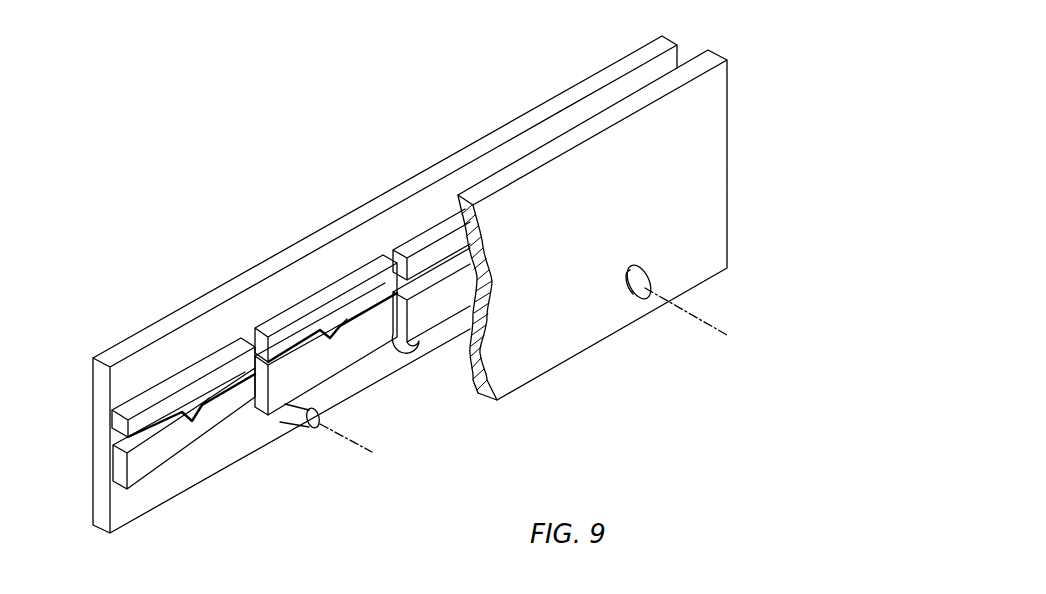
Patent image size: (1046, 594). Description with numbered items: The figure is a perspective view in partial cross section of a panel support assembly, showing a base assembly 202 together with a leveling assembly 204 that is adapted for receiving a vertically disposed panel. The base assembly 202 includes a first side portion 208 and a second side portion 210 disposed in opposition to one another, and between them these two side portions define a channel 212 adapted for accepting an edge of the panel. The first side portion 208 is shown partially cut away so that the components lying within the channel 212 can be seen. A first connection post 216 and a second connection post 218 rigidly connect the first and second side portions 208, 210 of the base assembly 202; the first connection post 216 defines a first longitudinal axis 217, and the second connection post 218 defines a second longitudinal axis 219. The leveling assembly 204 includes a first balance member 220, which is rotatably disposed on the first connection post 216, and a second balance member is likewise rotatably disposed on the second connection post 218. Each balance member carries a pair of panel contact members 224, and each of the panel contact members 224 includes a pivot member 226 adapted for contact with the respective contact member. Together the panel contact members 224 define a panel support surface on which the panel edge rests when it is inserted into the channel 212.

The base assembly 202 is at (425, 266).
The leveling assembly 204 is at (163, 476).
The first side portion 208 is at (707, 98).
The second side portion 210 is at (678, 48).
The channel 212 is at (517, 150).
The first connection post 216 is at (304, 428).
The first longitudinal axis 217 is at (374, 452).
The second connection post 218 is at (657, 277).
The second longitudinal axis 219 is at (711, 326).
The first balance member 220 is at (139, 465).
The panel contact members 224 is at (141, 421).
The pivot member 226 is at (192, 407).